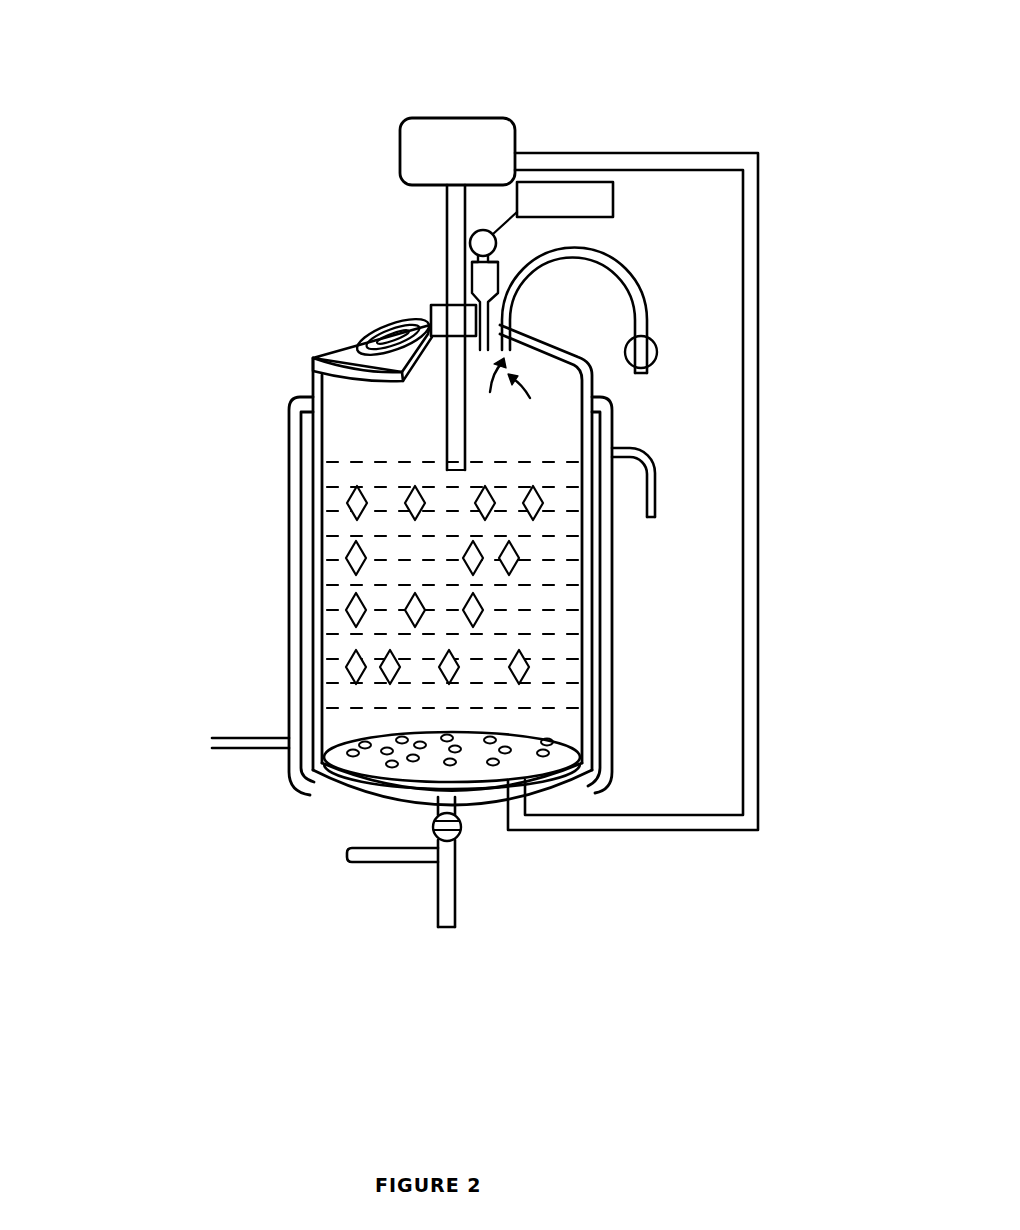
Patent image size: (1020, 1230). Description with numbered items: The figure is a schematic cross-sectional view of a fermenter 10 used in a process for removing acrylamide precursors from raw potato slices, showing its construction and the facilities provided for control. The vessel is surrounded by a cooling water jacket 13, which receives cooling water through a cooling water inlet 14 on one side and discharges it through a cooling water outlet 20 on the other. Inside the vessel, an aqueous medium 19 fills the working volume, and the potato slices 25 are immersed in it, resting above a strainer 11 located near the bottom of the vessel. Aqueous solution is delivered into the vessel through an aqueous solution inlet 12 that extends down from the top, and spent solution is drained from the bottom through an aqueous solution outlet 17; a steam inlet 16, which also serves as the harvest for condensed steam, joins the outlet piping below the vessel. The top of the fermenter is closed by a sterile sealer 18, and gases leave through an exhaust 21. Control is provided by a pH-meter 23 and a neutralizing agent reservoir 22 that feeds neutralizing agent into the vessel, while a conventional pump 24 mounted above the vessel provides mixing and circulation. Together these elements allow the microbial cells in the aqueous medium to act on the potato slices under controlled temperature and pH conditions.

The fermenter 10 is at (703, 417).
The strainer 11 is at (565, 747).
The aqueous solution inlet 12 is at (435, 437).
The cooling water jacket 13 is at (285, 602).
The cooling water inlet 14 is at (183, 750).
The steam inlet 16 is at (316, 867).
The aqueous solution outlet 17 is at (447, 936).
The sterile sealer 18 is at (419, 330).
The aqueous medium 19 is at (572, 698).
The cooling water outlet 20 is at (643, 585).
The exhaust 21 is at (645, 418).
The neutralizing agent reservoir 22 is at (510, 245).
The pH-meter 23 is at (595, 202).
The conventional pump 24 is at (388, 157).
The potato slices 25 is at (331, 667).